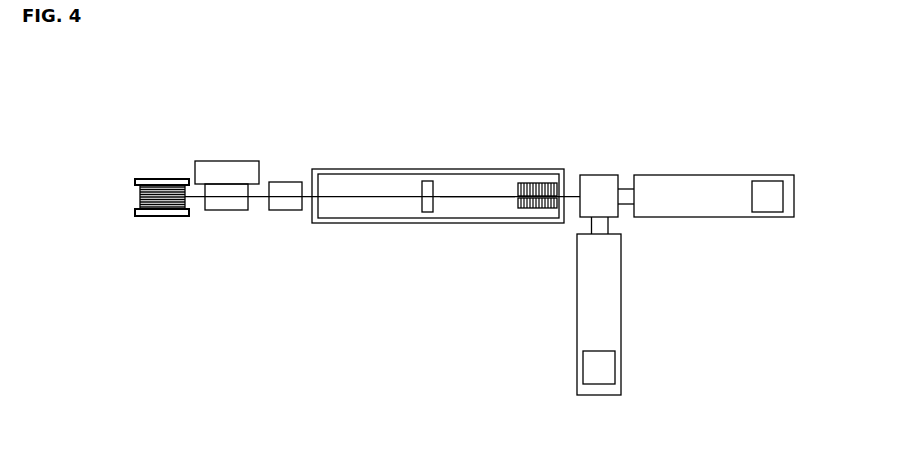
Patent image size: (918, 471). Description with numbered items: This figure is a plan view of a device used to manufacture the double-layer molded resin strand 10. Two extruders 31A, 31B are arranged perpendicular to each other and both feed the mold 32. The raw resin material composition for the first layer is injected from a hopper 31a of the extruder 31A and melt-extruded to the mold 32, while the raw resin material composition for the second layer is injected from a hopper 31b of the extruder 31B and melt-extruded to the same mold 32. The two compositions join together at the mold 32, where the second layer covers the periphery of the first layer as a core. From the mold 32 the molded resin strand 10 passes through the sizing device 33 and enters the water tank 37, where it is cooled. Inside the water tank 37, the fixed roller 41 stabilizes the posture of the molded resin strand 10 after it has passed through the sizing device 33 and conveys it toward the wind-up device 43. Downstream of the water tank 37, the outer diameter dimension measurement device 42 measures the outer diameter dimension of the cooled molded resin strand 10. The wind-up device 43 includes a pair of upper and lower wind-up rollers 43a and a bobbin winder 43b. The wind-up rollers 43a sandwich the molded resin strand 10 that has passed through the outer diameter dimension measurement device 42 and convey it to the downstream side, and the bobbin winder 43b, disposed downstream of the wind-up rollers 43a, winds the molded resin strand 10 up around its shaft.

The double-layer molded resin strand 10 is at (488, 198).
The mold 32 is at (595, 181).
The sizing device 33 is at (536, 183).
The water tank 37 is at (376, 170).
The fixed roller 41 is at (423, 202).
The outer diameter dimension measurement device 42 is at (285, 204).
The wind-up device 43 is at (228, 150).
The wind-up rollers 43a is at (226, 218).
The bobbin winder 43b is at (162, 222).
The extruder 31A is at (693, 178).
The hopper 31a is at (764, 186).
The extruder 31B is at (607, 292).
The hopper 31b is at (610, 368).